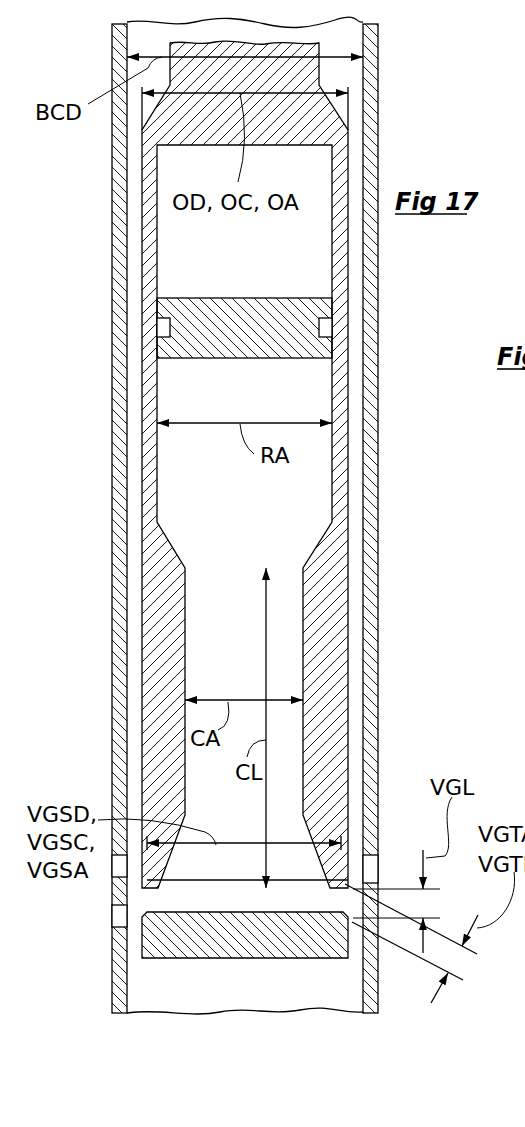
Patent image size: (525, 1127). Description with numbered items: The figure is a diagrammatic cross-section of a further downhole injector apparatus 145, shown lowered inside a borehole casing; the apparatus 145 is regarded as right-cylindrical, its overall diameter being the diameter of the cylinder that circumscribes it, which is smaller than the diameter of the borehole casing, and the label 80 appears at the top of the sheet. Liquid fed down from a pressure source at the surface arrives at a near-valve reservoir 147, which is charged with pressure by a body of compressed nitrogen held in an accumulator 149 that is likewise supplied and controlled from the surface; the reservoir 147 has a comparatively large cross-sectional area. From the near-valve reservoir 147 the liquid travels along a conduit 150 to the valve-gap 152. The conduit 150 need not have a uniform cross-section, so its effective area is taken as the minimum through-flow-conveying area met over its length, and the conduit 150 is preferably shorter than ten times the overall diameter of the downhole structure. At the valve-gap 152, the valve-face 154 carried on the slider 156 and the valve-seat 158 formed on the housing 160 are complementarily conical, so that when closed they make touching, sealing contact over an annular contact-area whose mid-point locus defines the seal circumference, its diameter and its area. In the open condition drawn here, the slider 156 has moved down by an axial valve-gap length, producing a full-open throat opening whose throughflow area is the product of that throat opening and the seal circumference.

The casing / tubular housing 80 is at (318, 515).
The apparatus 145 is at (327, 565).
The accumulator 149 is at (203, 260).
The near-valve reservoir 147 is at (224, 388).
The conduit 150 is at (210, 630).
The housing 160 is at (327, 762).
The slider 156 is at (167, 935).
The valve-seat 158 is at (347, 887).
The valve-gap 152 is at (334, 898).
The valve-face 154 is at (336, 910).